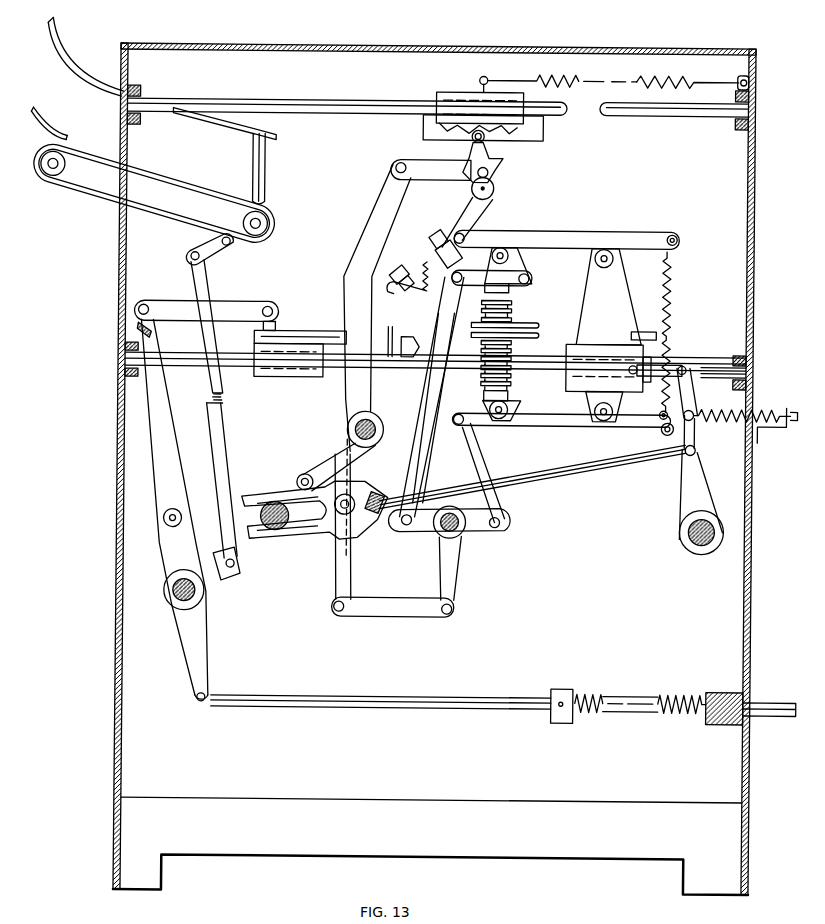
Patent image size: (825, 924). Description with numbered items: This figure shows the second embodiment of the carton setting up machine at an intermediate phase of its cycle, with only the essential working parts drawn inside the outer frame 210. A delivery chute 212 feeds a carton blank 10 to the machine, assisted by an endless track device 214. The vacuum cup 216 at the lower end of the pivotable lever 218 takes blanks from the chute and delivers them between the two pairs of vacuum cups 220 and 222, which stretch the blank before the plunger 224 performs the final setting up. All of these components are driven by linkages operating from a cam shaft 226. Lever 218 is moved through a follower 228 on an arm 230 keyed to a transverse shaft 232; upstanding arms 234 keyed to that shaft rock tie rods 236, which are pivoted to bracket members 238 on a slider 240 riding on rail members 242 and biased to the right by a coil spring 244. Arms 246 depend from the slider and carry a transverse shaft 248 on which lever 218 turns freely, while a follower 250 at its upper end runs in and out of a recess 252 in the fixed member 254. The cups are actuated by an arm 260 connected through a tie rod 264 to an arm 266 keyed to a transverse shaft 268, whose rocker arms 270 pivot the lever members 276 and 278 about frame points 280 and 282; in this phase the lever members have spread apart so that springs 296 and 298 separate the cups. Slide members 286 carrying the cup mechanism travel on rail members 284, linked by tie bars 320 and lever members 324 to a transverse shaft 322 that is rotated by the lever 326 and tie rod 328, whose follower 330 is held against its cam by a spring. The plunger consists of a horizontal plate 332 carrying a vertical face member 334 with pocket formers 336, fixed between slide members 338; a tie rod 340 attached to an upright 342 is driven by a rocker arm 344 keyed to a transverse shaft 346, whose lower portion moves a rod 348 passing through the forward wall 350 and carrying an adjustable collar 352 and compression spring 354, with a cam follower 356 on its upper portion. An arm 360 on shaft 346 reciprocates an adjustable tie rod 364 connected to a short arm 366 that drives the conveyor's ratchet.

The carton blank 10 is at (243, 155).
The outer frame 210 is at (594, 45).
The delivery chute 212 is at (72, 58).
The endless track device 214 is at (97, 207).
The vacuum cup 216 is at (398, 268).
The pivotable lever 218 is at (470, 217).
The vacuum cups 220 is at (512, 310).
The vacuum cups 222 is at (512, 352).
The plunger 224 is at (315, 340).
The cam shaft 226 is at (250, 498).
The follower 228 is at (298, 476).
The arm 230 is at (323, 455).
The transverse shaft 232 is at (356, 414).
The upstanding arms 234 is at (358, 253).
The tie rods 236 is at (427, 175).
The bracket members 238 is at (490, 168).
The slider 240 is at (466, 92).
The rail members 242 is at (258, 100).
The coil spring 244 is at (670, 75).
The arms 246 is at (500, 152).
The transverse shaft 248 is at (492, 188).
The follower 250 is at (470, 150).
The recess 252 is at (436, 125).
The fixed member 254 is at (540, 130).
The arm 260 is at (336, 578).
The tie rod 264 is at (383, 617).
The arm 266 is at (458, 582).
The transverse shaft 268 is at (440, 535).
The rocker arms 270 is at (478, 534).
The lever member 276 is at (576, 240).
The lever member 278 is at (538, 425).
The pivot point 280 is at (675, 236).
The pivot point 282 is at (661, 432).
The rail members 284 is at (716, 362).
The slide members 286 is at (598, 343).
The springs 296 is at (667, 297).
The springs 298 is at (680, 358).
The tie bars 320 is at (668, 362).
The transverse shaft 322 is at (690, 548).
The lever members 324 is at (696, 428).
The lever 326 is at (689, 505).
The tie rod 328 is at (612, 468).
The follower 330 is at (370, 516).
The horizontal plate 332 is at (762, 405).
The vertical face member 334 is at (397, 286).
The pocket formers 336 is at (405, 337).
The slide members 338 is at (290, 378).
The tie rod 340 is at (240, 303).
The upright 342 is at (262, 330).
The rocker arm 344 is at (140, 460).
The transverse shaft 346 is at (175, 595).
The rod 348 is at (296, 696).
The forward wall 350 is at (752, 630).
The adjustable collar 352 is at (560, 688).
The compression spring 354 is at (598, 694).
The cam follower 356 is at (162, 522).
The arm 360 is at (228, 590).
The adjustable tie rod 364 is at (226, 446).
The short arm 366 is at (202, 248).